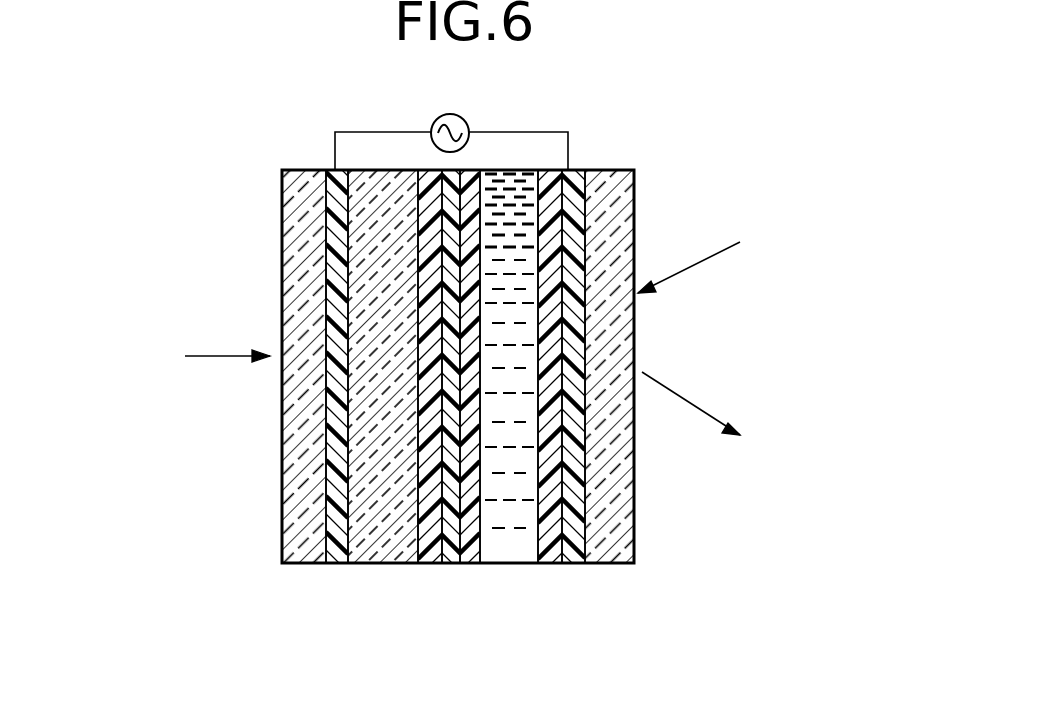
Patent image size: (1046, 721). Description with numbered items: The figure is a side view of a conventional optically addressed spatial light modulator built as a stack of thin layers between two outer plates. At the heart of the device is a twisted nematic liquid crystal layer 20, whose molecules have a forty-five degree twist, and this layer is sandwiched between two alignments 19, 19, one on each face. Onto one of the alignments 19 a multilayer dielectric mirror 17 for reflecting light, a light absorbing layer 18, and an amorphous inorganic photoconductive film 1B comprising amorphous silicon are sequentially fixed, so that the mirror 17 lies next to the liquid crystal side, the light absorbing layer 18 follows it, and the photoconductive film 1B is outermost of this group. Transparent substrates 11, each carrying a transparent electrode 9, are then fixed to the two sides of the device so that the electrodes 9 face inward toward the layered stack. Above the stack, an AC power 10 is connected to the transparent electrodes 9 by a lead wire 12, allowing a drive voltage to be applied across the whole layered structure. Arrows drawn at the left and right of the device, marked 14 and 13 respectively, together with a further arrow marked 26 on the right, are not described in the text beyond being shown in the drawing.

The transparent electrode 9 is at (337, 565).
The AC power 10 is at (465, 122).
The transparent substrate 11 is at (302, 192).
The lead wire 12 is at (378, 132).
The incident light 13 is at (702, 262).
The incident light 14 is at (220, 355).
The multilayer dielectric mirror 17 is at (448, 565).
The light absorbing layer 18 is at (430, 565).
The alignment 19 is at (468, 563).
The twisted nematic liquid crystal layer 20 is at (508, 552).
The outgoing light 26 is at (688, 400).
The amorphous inorganic photoconductive film 1B is at (378, 565).